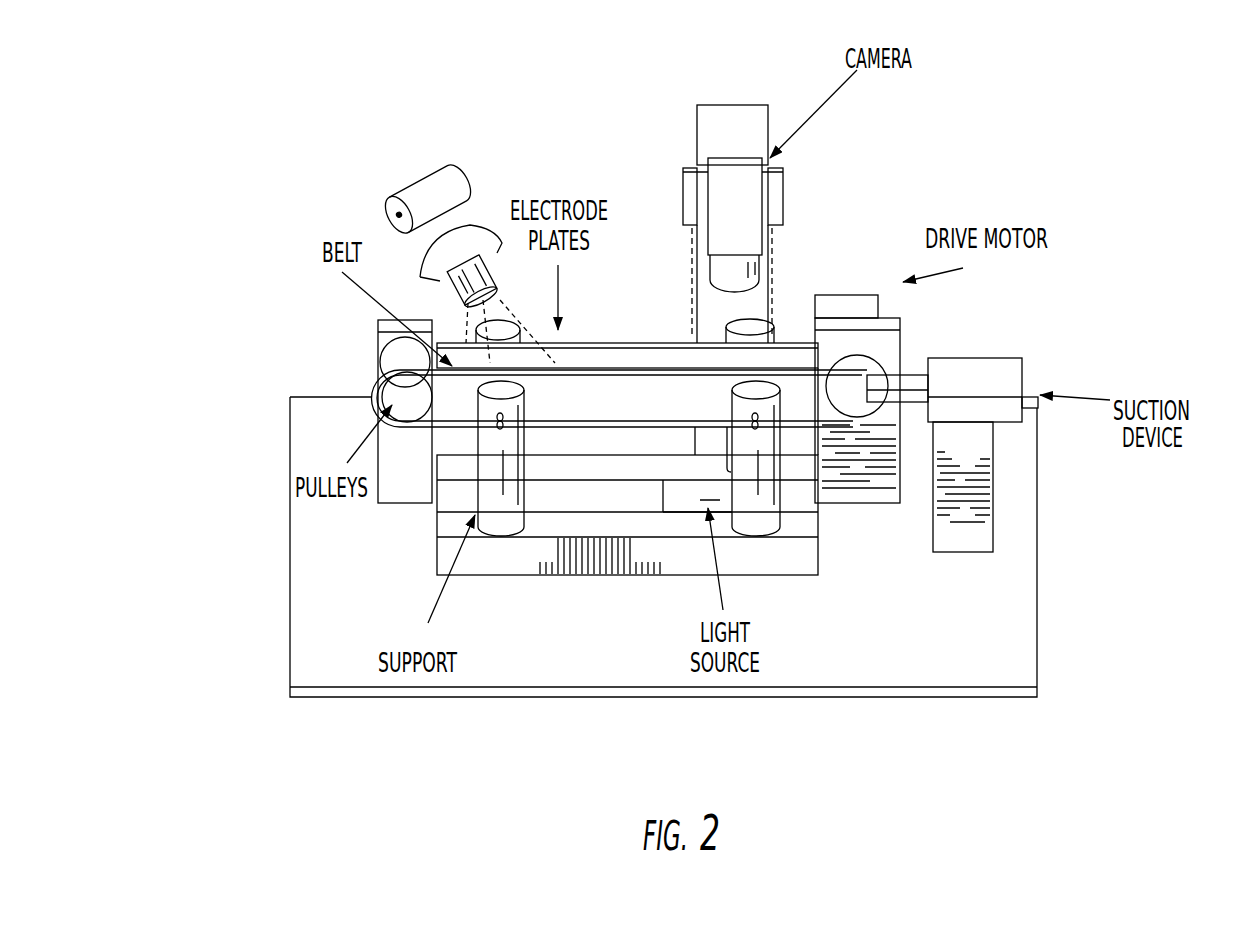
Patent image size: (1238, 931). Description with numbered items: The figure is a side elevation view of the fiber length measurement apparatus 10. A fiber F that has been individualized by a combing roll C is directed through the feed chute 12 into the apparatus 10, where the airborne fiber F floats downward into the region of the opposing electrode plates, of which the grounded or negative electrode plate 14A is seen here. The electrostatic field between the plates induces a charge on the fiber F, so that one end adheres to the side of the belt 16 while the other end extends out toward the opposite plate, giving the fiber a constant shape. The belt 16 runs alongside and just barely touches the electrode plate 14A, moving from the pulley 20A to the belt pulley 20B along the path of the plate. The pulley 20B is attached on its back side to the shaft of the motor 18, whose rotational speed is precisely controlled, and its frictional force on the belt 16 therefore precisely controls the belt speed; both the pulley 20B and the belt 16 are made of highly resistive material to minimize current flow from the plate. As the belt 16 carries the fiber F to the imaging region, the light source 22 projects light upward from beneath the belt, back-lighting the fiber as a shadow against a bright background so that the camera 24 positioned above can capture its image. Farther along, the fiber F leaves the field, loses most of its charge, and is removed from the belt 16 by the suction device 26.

The fiber length measurement apparatus 10 is at (1038, 92).
The feed chute 12 is at (477, 238).
The grounded or negative electrode plate 14A is at (640, 343).
The belt 16 is at (382, 372).
The motor 18 is at (860, 313).
The pulley 20A is at (390, 392).
The belt pulley 20B is at (848, 388).
The light source 22 is at (677, 498).
The camera 24 is at (747, 200).
The suction device 26 is at (1023, 377).
The combing roll C is at (428, 193).
The fiber F is at (493, 318).